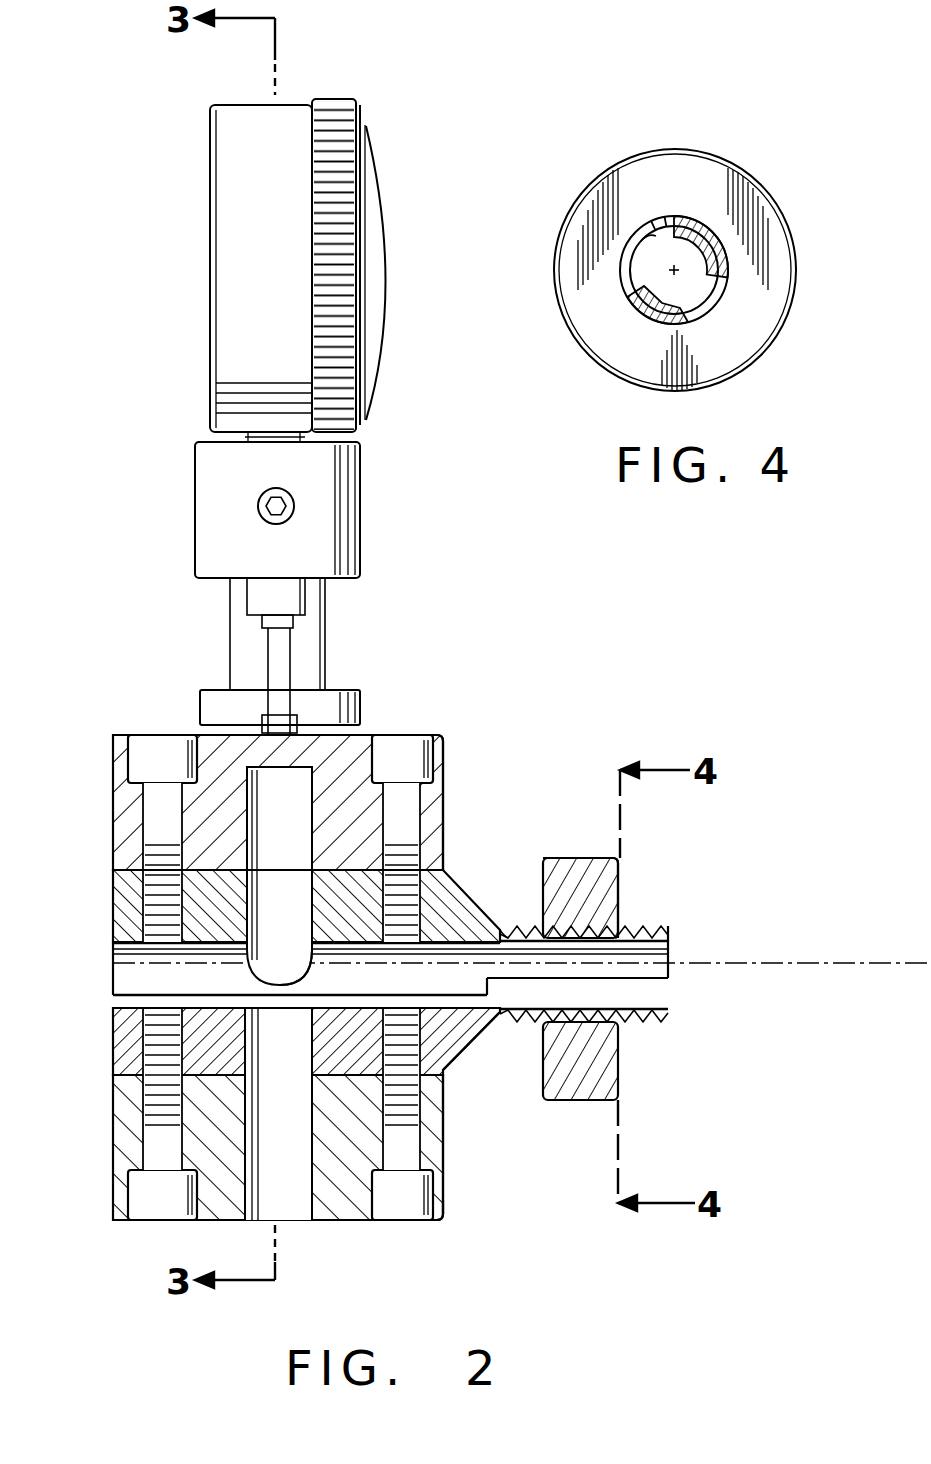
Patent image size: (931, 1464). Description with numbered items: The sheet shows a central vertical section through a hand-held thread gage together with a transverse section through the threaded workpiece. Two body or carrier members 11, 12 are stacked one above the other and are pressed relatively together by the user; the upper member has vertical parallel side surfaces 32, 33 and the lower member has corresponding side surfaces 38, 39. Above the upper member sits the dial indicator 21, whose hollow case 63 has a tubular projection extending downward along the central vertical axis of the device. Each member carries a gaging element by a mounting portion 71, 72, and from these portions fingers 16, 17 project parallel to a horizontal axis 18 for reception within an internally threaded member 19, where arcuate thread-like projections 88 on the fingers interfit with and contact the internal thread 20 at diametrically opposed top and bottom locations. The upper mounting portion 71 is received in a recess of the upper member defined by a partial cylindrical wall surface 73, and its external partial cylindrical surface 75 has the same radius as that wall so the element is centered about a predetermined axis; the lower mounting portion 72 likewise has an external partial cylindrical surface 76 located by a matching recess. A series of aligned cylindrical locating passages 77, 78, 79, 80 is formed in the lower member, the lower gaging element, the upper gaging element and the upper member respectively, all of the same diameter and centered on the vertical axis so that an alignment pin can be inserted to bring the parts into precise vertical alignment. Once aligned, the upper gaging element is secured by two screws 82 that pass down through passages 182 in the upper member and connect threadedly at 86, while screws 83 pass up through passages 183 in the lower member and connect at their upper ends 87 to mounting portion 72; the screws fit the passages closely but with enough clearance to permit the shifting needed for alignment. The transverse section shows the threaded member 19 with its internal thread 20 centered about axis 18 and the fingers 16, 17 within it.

In FIG. 2, the body or carrier member 11 is at (445, 745).
In FIG. 2, the body or carrier member 12 is at (448, 1155).
In FIG. 2, the finger 16 is at (670, 936).
In FIG. 4, the finger 16 is at (700, 235).
In FIG. 2, the finger 17 is at (668, 1022).
In FIG. 4, the finger 17 is at (650, 300).
In FIG. 2, the axis 18 is at (780, 967).
In FIG. 4, the axis 18 is at (680, 273).
In FIG. 2, the internally threaded member 19 is at (637, 858).
In FIG. 4, the internally threaded member 19 is at (752, 335).
In FIG. 2, the internal thread 20 is at (510, 930).
In FIG. 4, the internal thread 20 is at (662, 222).
In FIG. 2, the dial indicator 21 is at (370, 134).
In FIG. 2, the side surface 32 is at (113, 765).
In FIG. 2, the side surface 33 is at (445, 778).
In FIG. 2, the side surface 38 is at (118, 1118).
In FIG. 2, the side surface 39 is at (448, 1190).
In FIG. 2, the hollow case 63 is at (225, 222).
In FIG. 2, the mounting portion 71 is at (120, 903).
In FIG. 2, the mounting portion 72 is at (120, 1040).
In FIG. 2, the partial cylindrical wall surface 73 is at (113, 882).
In FIG. 2, the external partial cylindrical surface 75 is at (328, 870).
In FIG. 2, the external partial cylindrical surface 76 is at (342, 1085).
In FIG. 2, the locating passage 77 is at (300, 1205).
In FIG. 2, the locating passage 78 is at (250, 1043).
In FIG. 2, the locating passage 79 is at (300, 933).
In FIG. 2, the locating passage 80 is at (247, 830).
In FIG. 2, the screw 82 is at (158, 757).
In FIG. 2, the screw 83 is at (145, 1198).
In FIG. 2, the threaded connection 86 is at (155, 925).
In FIG. 2, the upper ends 87 is at (163, 1008).
In FIG. 2, the projection 88 is at (625, 928).
In FIG. 2, the passage 182 is at (150, 800).
In FIG. 2, the passage 183 is at (155, 1145).